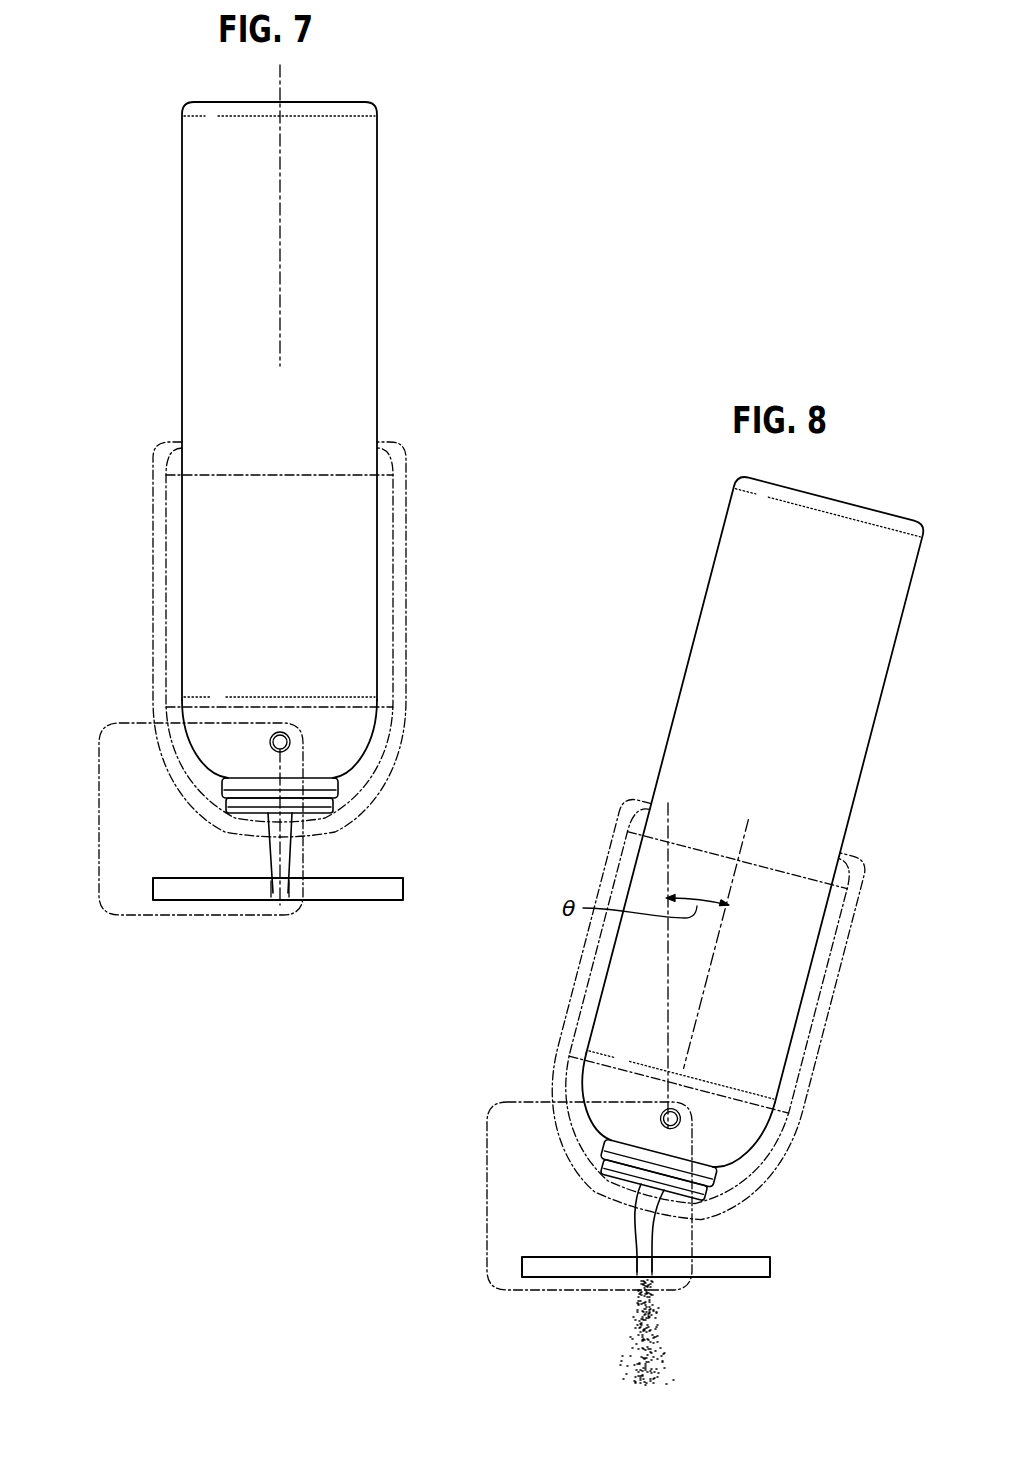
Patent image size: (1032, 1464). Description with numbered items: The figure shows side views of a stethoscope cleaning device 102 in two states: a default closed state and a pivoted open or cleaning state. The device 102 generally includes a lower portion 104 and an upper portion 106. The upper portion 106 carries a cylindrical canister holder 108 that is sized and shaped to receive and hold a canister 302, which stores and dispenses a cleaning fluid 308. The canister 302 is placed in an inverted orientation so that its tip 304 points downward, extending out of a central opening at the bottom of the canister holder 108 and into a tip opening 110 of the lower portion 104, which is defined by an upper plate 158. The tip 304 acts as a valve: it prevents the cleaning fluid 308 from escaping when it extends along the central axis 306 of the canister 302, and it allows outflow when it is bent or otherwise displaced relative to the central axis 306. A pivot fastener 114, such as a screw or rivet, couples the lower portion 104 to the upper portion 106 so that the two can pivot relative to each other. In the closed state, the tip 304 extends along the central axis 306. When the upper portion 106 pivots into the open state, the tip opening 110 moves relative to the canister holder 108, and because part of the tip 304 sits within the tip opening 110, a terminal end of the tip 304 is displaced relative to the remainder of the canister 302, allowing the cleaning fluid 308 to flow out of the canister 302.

In FIG. 7, the stethoscope cleaning device 102 is at (78, 716).
In FIG. 8, the stethoscope cleaning device 102 is at (509, 1079).
In FIG. 7, the lower portion 104 is at (114, 856).
In FIG. 8, the lower portion 104 is at (502, 1166).
In FIG. 7, the upper portion 106 is at (154, 577).
In FIG. 8, the upper portion 106 is at (608, 864).
In FIG. 7, the canister holder 108 is at (386, 542).
In FIG. 8, the canister holder 108 is at (726, 1014).
In FIG. 7, the tip opening 110 is at (298, 897).
In FIG. 8, the tip opening 110 is at (656, 1272).
In FIG. 7, the pivot fastener 114 is at (291, 743).
In FIG. 8, the pivot fastener 114 is at (678, 1118).
In FIG. 7, the upper plate 158 is at (370, 878).
In FIG. 8, the upper plate 158 is at (762, 1262).
In FIG. 7, the canister 302 is at (344, 333).
In FIG. 8, the canister 302 is at (806, 703).
In FIG. 7, the tip 304 is at (275, 855).
In FIG. 8, the tip 304 is at (640, 1224).
In FIG. 7, the central axis 306 is at (282, 68).
In FIG. 8, the central axis 306 is at (705, 990).
In FIG. 8, the cleaning fluid 308 is at (660, 1314).